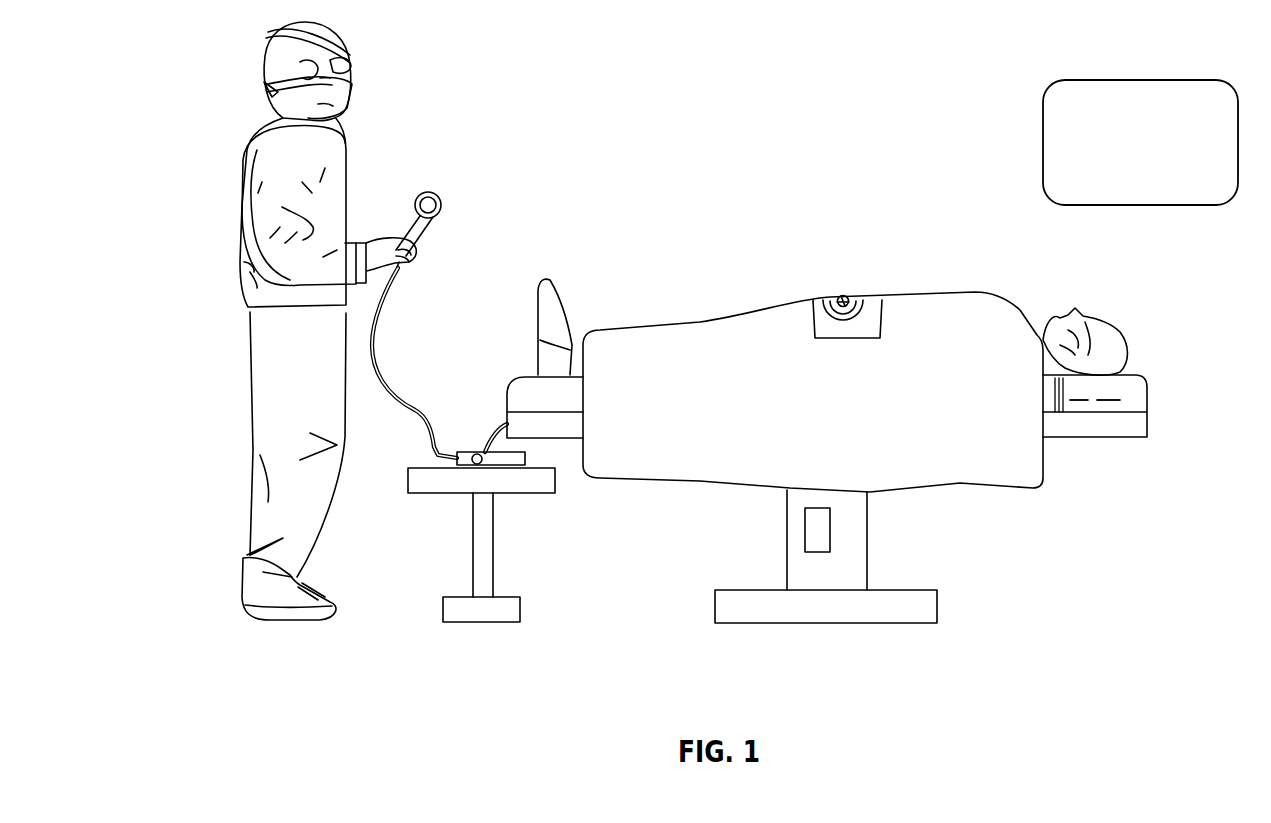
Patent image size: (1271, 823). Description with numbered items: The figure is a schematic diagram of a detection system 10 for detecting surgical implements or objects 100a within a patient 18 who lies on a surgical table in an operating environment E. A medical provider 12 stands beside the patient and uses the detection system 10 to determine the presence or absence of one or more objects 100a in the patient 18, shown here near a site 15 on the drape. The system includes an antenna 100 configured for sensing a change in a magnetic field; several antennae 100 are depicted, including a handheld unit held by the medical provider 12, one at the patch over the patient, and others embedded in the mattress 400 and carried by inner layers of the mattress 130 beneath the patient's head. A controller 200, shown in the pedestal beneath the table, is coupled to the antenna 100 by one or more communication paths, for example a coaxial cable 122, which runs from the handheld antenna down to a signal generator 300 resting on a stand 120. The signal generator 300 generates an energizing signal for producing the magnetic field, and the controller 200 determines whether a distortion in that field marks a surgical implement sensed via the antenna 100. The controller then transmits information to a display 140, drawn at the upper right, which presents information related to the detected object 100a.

The detection system 10 is at (550, 255).
The medical provider 12 is at (245, 155).
The patch / access site on patient 15 is at (840, 312).
The patient 18 is at (1115, 327).
The antenna 100 is at (435, 192).
The object 100a is at (835, 300).
The stand / cart 120 is at (528, 460).
The coaxial cable 122 is at (489, 422).
The mattress 130 is at (1085, 437).
The display 140 is at (1190, 80).
The controller 200 is at (830, 540).
The signal generator 300 is at (467, 466).
The mattress 400 is at (1138, 387).
The operating environment E is at (920, 198).